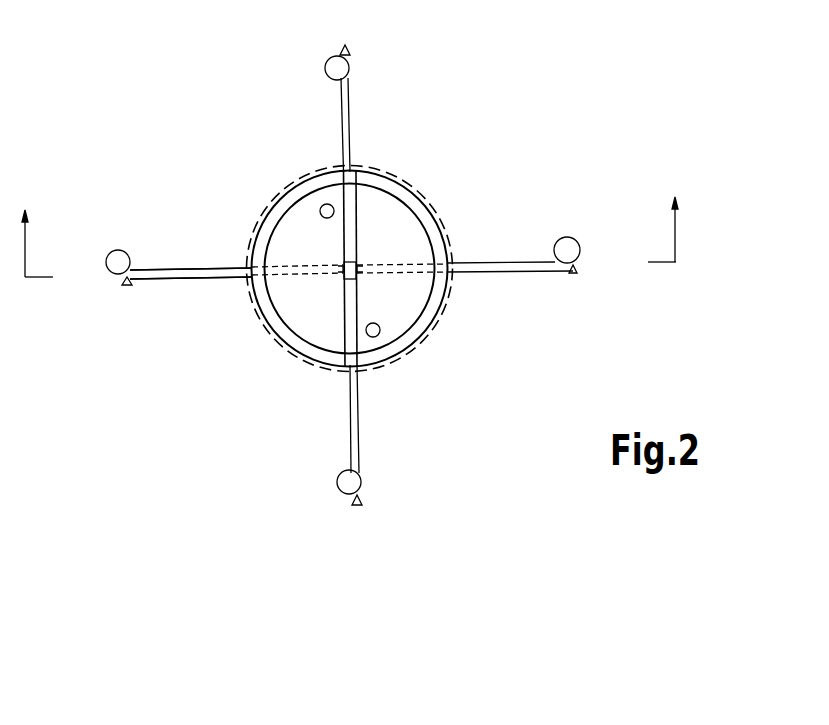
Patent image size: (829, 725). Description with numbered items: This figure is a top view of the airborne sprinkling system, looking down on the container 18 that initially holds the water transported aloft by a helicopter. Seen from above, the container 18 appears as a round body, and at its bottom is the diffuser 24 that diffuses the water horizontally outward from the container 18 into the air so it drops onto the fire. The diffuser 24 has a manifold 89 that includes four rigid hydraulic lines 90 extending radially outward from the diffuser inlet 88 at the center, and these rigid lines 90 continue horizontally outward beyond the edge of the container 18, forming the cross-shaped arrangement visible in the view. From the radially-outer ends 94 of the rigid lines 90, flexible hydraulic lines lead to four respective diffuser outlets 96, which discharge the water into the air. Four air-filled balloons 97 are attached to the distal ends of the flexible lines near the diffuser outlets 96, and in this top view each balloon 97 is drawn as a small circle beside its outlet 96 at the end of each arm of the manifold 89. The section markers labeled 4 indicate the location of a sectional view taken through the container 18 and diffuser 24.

The container 18 is at (410, 157).
The diffuser 24 is at (625, 160).
The diffuser inlet 88 is at (358, 261).
The manifold 89 is at (610, 115).
The rigid hydraulic lines 90 is at (347, 100).
The radially-outer ends 94 is at (152, 272).
The diffuser outlets 96 is at (347, 47).
The air-filled balloons 97 is at (332, 64).
The section line 4- 4 is at (351, 224).